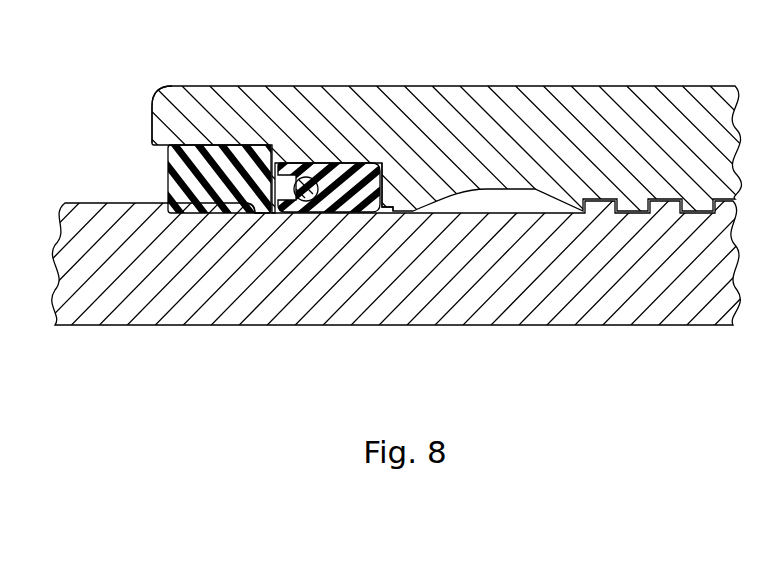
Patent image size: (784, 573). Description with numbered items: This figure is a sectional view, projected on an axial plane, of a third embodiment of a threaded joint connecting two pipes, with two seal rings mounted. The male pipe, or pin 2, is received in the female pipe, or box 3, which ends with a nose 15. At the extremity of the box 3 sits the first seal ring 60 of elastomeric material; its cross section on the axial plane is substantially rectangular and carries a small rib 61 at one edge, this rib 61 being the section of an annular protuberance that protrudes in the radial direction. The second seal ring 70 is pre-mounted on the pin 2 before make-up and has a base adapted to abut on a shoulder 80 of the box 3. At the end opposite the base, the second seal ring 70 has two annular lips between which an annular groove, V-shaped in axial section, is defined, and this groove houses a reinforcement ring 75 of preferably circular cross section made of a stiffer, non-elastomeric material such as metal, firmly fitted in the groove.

The pin 2 is at (523, 287).
The box 3 is at (592, 128).
The nose 15 is at (152, 108).
The first seal ring 60 is at (232, 168).
The small rib 61 is at (260, 212).
The second seal ring 70 is at (362, 180).
The reinforcement ring 75 is at (308, 177).
The shoulder 80 is at (381, 187).